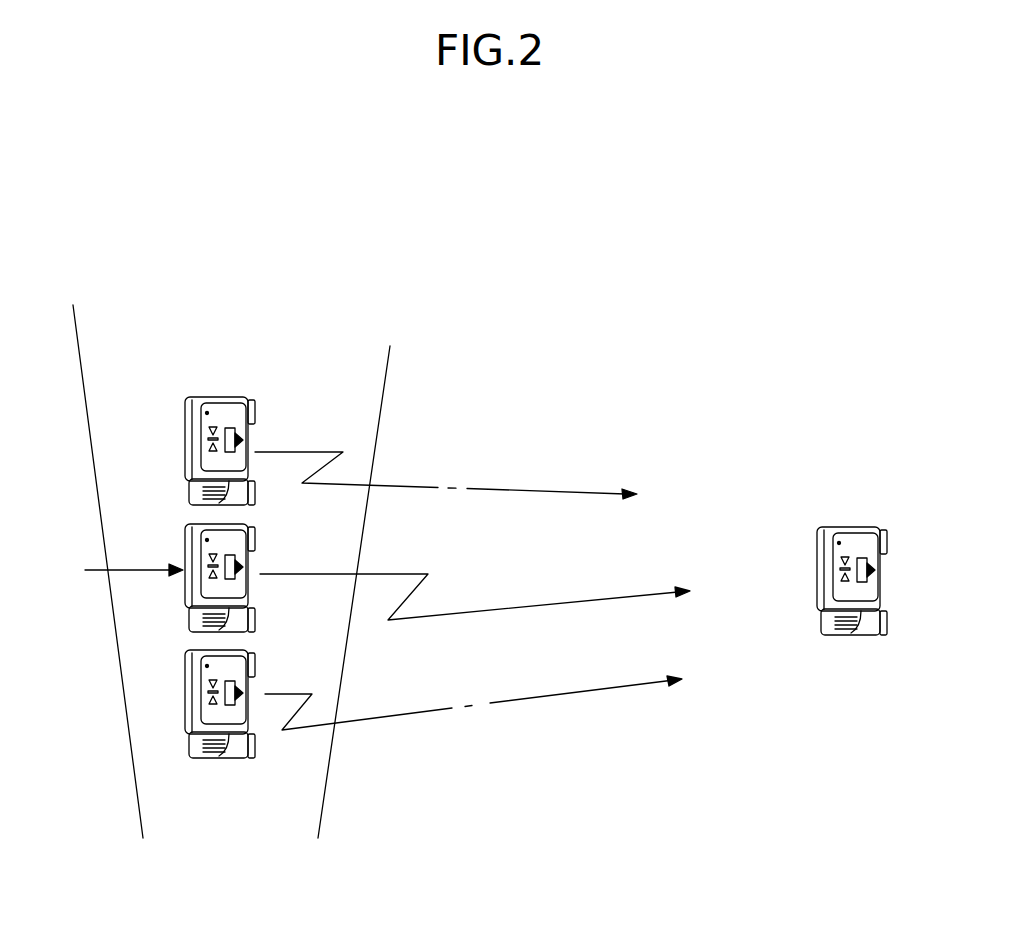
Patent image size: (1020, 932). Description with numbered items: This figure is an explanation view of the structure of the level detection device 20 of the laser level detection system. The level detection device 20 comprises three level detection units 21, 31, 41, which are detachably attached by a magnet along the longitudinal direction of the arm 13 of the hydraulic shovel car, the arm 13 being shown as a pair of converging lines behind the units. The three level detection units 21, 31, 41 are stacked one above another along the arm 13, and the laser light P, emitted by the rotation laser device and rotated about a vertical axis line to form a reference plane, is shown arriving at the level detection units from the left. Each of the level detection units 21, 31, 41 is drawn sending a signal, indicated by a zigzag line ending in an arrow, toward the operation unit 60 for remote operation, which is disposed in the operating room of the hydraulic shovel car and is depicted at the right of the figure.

The arm 13 is at (290, 762).
The level detection device 20 is at (299, 520).
The level detection unit 21 is at (226, 397).
The level detection unit 31 is at (254, 552).
The level detection unit 41 is at (255, 683).
The operation unit 60 is at (853, 518).
The laser light P is at (128, 568).